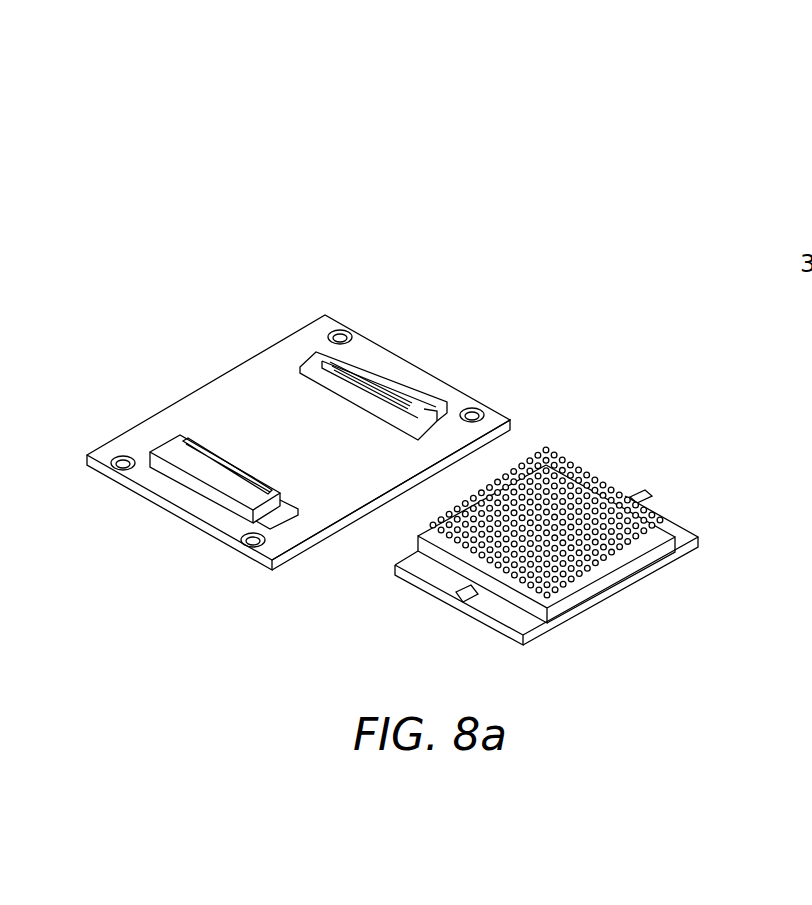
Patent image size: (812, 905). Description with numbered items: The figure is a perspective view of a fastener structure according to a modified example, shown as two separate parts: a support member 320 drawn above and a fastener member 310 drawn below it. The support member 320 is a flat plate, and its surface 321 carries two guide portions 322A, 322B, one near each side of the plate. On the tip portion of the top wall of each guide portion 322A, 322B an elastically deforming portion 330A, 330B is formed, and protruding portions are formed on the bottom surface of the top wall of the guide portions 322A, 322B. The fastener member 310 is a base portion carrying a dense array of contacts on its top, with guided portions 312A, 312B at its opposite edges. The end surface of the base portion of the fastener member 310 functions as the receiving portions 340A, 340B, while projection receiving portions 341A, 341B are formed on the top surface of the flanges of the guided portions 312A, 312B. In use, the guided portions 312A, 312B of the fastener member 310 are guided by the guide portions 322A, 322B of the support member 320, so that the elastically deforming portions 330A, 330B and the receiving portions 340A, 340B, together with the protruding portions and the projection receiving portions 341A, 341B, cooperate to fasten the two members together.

The support member 320 is at (228, 345).
The plate surface 321 is at (458, 478).
The guide portion 322A is at (313, 340).
The guide portion 322B is at (161, 421).
The elastically deforming portion 330A is at (353, 410).
The elastically deforming portion 330B is at (230, 442).
The fastener member 310 is at (616, 466).
The guided portion 312A is at (708, 550).
The guided portion 312B is at (399, 554).
The receiving portion 340A is at (675, 527).
The receiving portion 340B is at (520, 603).
The projection receiving portion 341A is at (633, 494).
The projection receiving portion 341B is at (452, 608).